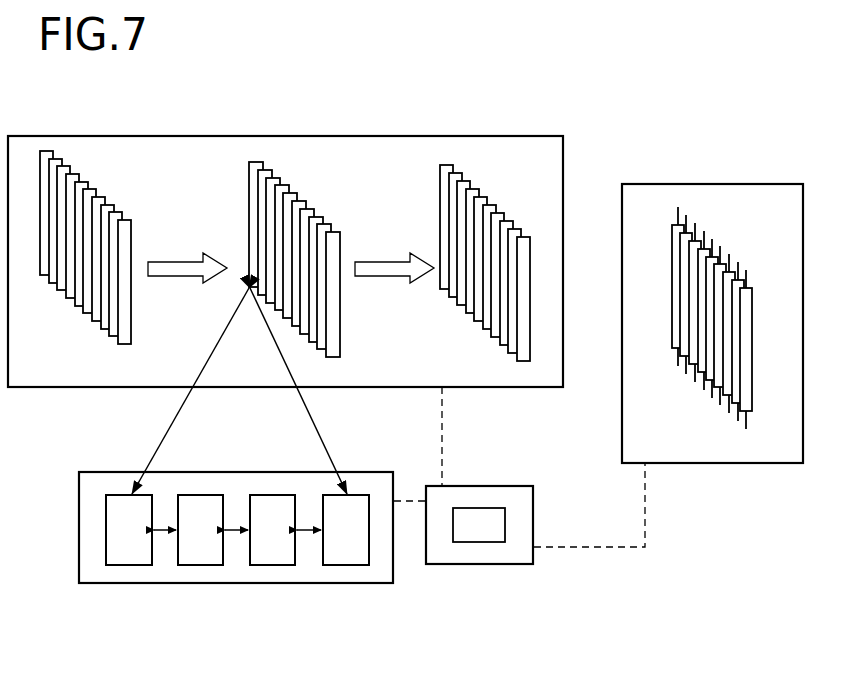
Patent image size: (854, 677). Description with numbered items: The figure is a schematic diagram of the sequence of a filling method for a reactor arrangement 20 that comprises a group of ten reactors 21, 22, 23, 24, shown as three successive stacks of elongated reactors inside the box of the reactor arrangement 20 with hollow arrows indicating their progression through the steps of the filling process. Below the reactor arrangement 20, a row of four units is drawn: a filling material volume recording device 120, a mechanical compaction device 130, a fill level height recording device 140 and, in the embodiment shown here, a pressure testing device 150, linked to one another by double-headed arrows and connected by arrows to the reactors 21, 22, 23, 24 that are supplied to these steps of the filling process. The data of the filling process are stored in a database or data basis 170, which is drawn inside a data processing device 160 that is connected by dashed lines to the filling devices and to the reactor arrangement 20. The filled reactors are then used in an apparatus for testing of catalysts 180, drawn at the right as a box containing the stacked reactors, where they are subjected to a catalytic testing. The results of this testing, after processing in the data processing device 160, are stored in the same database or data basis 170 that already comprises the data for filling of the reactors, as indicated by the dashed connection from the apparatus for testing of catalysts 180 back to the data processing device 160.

The reactor arrangement 20 is at (325, 248).
The reactor 21 is at (106, 264).
The reactor 22 is at (107, 333).
The reactor 23 is at (115, 208).
The reactor 24 is at (90, 314).
The filling material volume recording device 120 is at (128, 567).
The mechanical compaction device 130 is at (198, 567).
The fill level height recording device 140 is at (270, 567).
The pressure testing device 150 is at (345, 567).
The data processing device 160 is at (506, 560).
The database or data basis 170 is at (479, 525).
The apparatus for testing of catalysts 180 is at (803, 207).